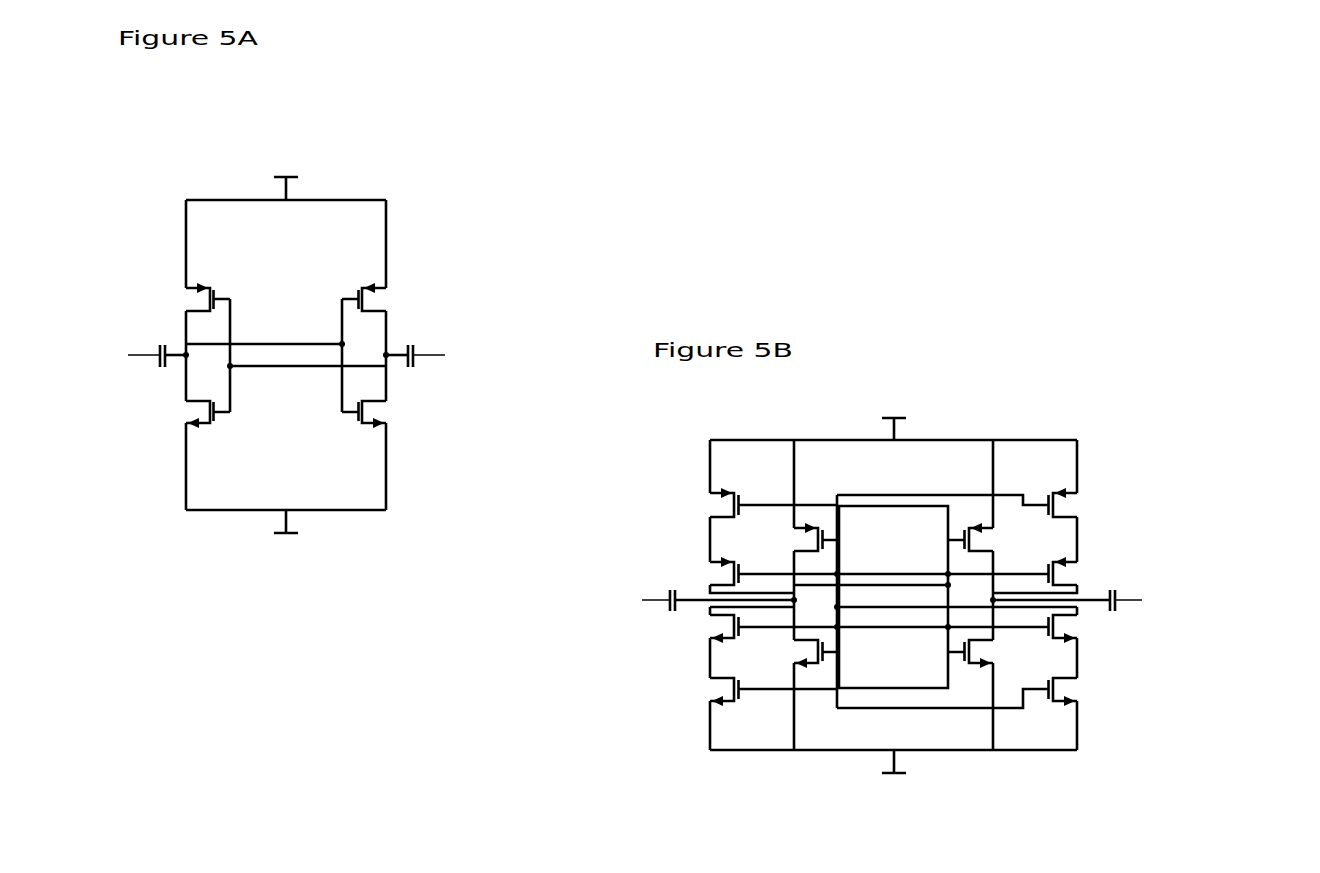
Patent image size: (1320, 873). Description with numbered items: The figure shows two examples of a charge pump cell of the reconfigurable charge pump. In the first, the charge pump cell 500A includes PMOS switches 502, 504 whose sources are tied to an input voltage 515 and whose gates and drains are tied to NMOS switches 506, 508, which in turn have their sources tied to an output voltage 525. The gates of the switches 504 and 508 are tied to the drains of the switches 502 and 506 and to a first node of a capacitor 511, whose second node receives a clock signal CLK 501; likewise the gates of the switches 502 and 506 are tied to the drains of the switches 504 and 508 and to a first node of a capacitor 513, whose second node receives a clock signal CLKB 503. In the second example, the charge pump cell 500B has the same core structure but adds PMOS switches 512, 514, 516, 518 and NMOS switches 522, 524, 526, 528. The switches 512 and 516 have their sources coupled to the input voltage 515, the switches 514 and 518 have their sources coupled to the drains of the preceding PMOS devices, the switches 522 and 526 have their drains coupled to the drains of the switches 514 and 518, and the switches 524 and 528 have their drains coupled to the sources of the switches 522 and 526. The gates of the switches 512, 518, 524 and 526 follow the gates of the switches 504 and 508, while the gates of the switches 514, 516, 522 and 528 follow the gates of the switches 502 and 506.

In FIG. 5A, the charge pump cell 500A is at (472, 147).
In FIG. 5B, the charge pump cell 500B is at (1170, 351).
In FIG. 5A, the input voltage 515 is at (285, 163).
In FIG. 5B, the input voltage 515 is at (894, 402).
In FIG. 5A, the output voltage 525 is at (285, 552).
In FIG. 5B, the output voltage 525 is at (893, 791).
In FIG. 5A, the clock signal CLK 501 is at (110, 355).
In FIG. 5B, the clock signal CLK 501 is at (670, 601).
In FIG. 5A, the clock signal CLKB 503 is at (475, 355).
In FIG. 5B, the clock signal CLKB 503 is at (1119, 601).
In FIG. 5A, the capacitor 511 is at (157, 350).
In FIG. 5B, the capacitor 511 is at (670, 595).
In FIG. 5A, the capacitor 513 is at (448, 328).
In FIG. 5B, the capacitor 513 is at (1150, 572).
In FIG. 5A, the switch 502 is at (141, 287).
In FIG. 5B, the switch 502 is at (797, 537).
In FIG. 5A, the switch 504 is at (432, 287).
In FIG. 5B, the switch 504 is at (989, 537).
In FIG. 5A, the switch 506 is at (136, 412).
In FIG. 5B, the switch 506 is at (797, 653).
In FIG. 5A, the switch 508 is at (432, 413).
In FIG. 5B, the switch 508 is at (989, 654).
In FIG. 5B, the switch 512 is at (710, 503).
In FIG. 5B, the switch 514 is at (702, 564).
In FIG. 5B, the switch 516 is at (1021, 503).
In FIG. 5B, the switch 518 is at (1077, 570).
In FIG. 5B, the switch 522 is at (764, 628).
In FIG. 5B, the switch 524 is at (708, 692).
In FIG. 5B, the switch 526 is at (1076, 628).
In FIG. 5B, the switch 528 is at (1018, 692).